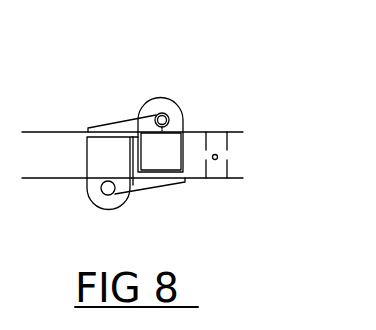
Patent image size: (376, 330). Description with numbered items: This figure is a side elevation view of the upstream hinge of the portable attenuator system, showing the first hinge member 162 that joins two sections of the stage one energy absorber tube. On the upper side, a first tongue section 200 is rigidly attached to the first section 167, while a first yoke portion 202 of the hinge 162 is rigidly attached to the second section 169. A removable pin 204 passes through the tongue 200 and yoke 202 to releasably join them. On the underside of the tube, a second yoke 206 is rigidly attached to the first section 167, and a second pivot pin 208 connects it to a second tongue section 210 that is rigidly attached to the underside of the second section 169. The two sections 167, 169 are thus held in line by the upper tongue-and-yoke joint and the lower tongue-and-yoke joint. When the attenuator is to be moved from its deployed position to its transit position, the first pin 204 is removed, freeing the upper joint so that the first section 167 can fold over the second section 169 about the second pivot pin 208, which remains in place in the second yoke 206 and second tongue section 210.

The first hinge member 162 is at (138, 66).
The first section 167 is at (40, 130).
The second section 169 is at (190, 148).
The first tongue section 200 is at (119, 118).
The first yoke portion 202 is at (176, 102).
The removable pin 204 is at (171, 116).
The second yoke 206 is at (88, 203).
The second pivot pin 208 is at (110, 197).
The second tongue section 210 is at (150, 190).